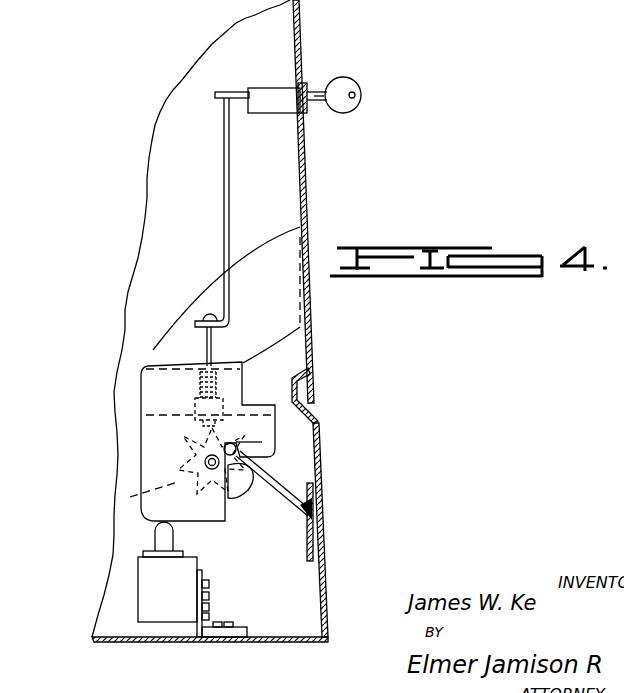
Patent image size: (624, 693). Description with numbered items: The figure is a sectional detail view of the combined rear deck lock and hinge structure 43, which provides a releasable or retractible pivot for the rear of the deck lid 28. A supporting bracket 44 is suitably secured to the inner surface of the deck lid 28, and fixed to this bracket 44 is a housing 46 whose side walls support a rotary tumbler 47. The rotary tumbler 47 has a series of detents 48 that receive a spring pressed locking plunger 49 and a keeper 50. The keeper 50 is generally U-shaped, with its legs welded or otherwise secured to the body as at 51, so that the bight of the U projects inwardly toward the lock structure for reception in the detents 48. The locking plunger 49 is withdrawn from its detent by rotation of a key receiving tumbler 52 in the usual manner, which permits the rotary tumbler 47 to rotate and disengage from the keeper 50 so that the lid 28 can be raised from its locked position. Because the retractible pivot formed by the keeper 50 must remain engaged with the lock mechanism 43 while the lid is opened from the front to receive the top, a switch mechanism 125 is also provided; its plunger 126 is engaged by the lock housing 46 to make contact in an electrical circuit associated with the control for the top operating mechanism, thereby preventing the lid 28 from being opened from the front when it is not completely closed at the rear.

The deck lid 28 is at (310, 175).
The combined rear deck lock and hinge structure 43 is at (130, 416).
The supporting bracket 44 is at (282, 299).
The housing 46 is at (163, 464).
The rotary tumbler 47 is at (255, 503).
The detents 48 is at (130, 497).
The spring pressed locking plunger 49 is at (245, 392).
The keeper 50 is at (236, 441).
The welded securement 51 is at (312, 520).
The key receiving tumbler 52 is at (287, 72).
The switch mechanism 125 is at (150, 572).
The plunger 126 is at (155, 540).